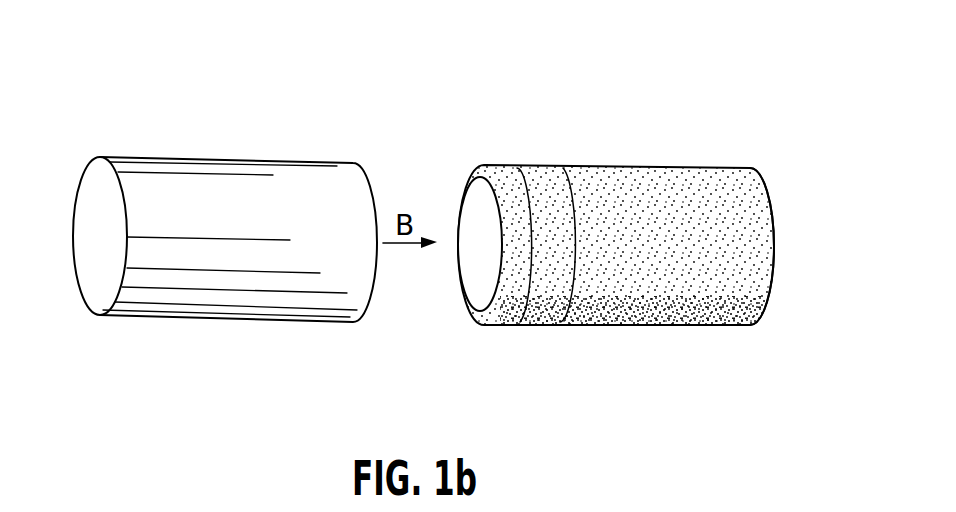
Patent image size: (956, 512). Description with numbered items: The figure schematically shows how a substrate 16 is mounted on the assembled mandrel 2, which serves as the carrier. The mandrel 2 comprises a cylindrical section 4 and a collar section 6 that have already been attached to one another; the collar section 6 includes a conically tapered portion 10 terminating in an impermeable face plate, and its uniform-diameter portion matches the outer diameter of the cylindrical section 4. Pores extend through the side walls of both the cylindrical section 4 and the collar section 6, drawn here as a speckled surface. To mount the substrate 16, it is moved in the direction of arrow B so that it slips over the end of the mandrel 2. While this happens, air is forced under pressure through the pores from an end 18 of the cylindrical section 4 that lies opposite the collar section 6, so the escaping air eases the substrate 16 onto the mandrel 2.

The mandrel 2 is at (647, 232).
The cylindrical section 4 is at (606, 168).
The collar section 6 is at (537, 323).
The conically tapered portion 10 is at (500, 168).
The substrate 16 is at (227, 318).
The end of the cylindrical section 18 is at (775, 236).